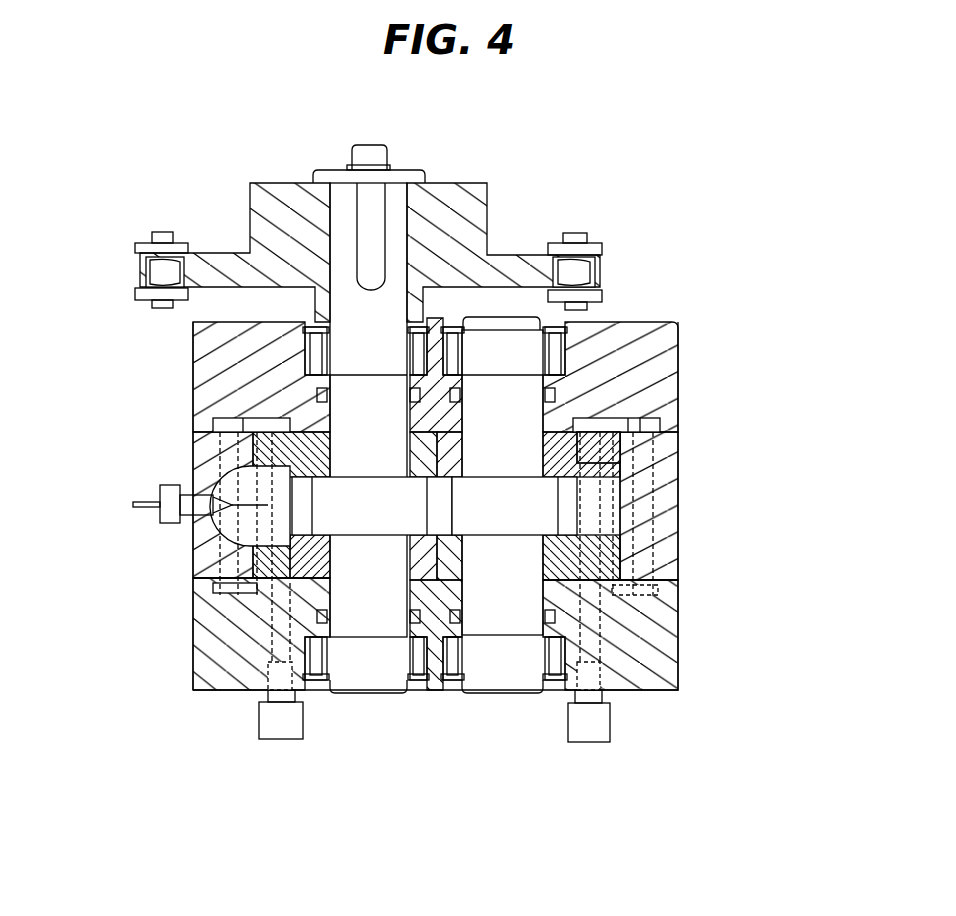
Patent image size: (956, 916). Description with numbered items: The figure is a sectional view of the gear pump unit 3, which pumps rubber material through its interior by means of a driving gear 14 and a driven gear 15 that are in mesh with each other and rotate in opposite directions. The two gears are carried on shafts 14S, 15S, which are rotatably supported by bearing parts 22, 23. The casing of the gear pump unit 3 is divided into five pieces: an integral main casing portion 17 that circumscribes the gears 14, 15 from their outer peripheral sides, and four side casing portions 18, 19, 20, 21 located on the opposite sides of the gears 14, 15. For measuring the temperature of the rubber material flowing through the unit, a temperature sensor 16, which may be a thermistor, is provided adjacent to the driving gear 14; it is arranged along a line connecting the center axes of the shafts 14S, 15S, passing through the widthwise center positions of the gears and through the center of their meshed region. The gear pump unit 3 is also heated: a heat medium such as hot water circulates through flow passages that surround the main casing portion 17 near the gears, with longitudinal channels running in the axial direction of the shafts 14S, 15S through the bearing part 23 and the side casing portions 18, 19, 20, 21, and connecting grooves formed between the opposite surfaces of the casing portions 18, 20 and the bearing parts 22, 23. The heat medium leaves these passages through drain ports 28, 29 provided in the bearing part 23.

The gear pump unit 3 is at (185, 355).
The driving gear 14 is at (250, 492).
The driven gear 15 is at (520, 510).
The shaft of the driving gear 14S is at (377, 660).
The shaft of the driven gear 15S is at (500, 665).
The temperature sensor 16 is at (215, 536).
The main casing portion 17 is at (207, 467).
The side casing portion 18 is at (343, 505).
The side casing portion 19 is at (220, 605).
The side casing portion 20 is at (588, 456).
The side casing portion 21 is at (603, 620).
The bearing part 22 is at (628, 358).
The bearing part 23 is at (667, 693).
The drain port 28 is at (270, 723).
The drain port 29 is at (590, 723).